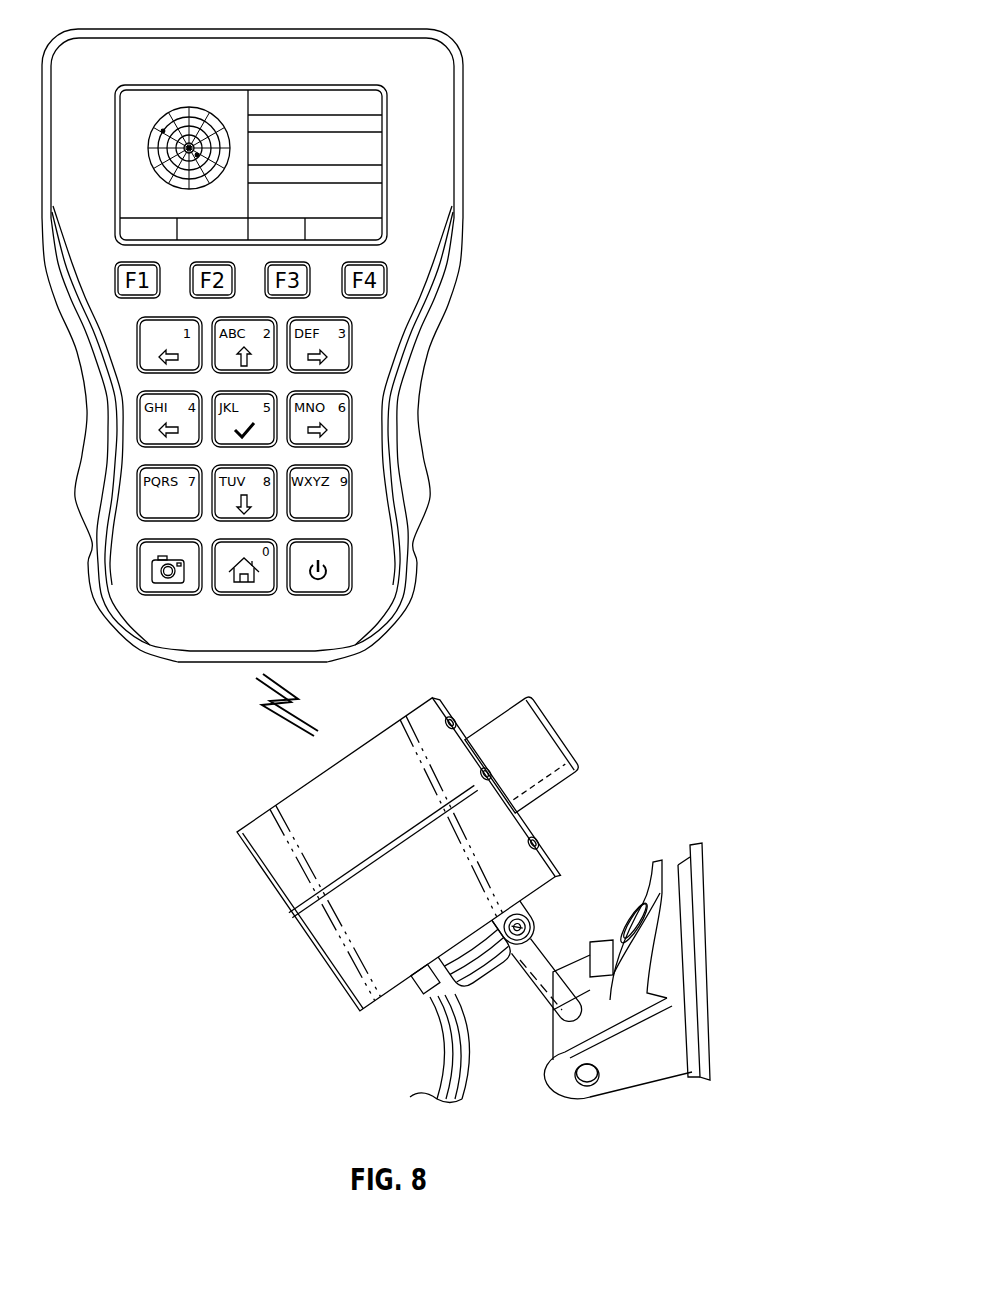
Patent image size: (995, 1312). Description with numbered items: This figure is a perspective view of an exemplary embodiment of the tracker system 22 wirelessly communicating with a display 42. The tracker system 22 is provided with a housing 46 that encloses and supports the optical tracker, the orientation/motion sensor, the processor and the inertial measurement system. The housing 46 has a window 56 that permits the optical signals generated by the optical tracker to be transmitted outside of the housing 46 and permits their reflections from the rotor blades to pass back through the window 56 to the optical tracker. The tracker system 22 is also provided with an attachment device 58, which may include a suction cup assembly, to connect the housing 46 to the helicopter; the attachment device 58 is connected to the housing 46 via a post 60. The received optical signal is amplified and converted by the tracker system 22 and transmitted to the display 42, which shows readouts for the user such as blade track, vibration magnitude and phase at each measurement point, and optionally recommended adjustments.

The display 42 is at (367, 195).
The tracker system 22 is at (651, 637).
The housing 46 is at (252, 868).
The window 56 is at (566, 731).
The attachment device 58 is at (707, 903).
The post 60 is at (536, 928).